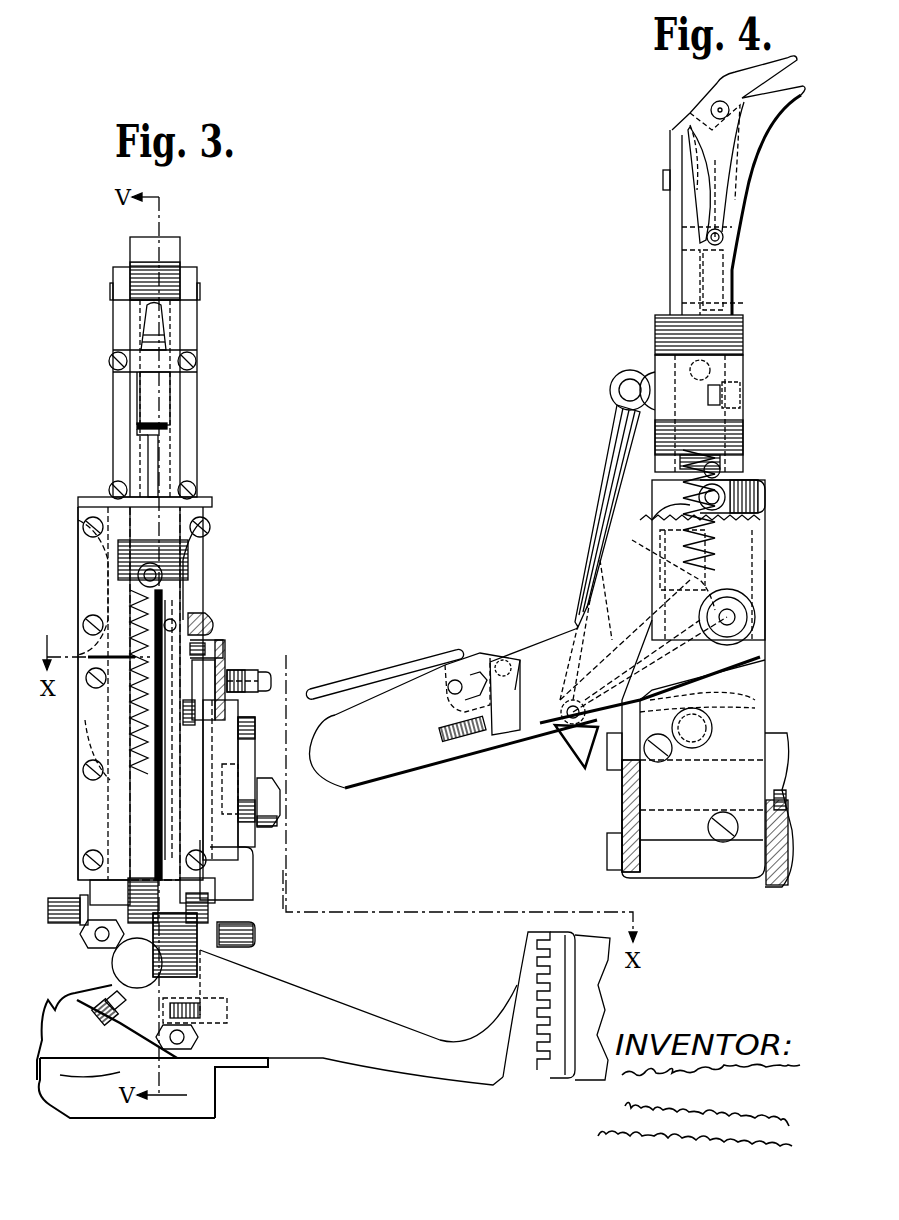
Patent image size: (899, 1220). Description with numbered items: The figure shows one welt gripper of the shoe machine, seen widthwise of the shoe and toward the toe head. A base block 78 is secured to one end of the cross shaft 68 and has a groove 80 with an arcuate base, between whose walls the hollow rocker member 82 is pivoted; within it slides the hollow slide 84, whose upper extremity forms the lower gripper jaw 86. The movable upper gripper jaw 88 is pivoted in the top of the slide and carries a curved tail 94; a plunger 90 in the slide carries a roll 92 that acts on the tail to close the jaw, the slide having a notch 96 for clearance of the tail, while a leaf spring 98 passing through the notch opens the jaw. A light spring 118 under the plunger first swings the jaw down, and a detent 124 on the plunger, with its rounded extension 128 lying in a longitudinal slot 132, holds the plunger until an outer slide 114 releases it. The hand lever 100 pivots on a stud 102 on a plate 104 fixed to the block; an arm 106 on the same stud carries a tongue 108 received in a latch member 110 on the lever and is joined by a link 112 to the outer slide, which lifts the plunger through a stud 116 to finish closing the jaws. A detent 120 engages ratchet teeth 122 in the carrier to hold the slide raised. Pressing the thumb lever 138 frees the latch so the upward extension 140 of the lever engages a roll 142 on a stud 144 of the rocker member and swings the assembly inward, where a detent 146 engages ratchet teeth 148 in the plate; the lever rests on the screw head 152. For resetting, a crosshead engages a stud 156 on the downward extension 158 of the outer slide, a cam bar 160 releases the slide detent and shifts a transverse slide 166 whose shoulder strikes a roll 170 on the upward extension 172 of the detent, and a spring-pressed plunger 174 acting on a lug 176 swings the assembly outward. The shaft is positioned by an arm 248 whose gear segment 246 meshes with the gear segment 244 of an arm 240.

In FIG. 3, the cross shaft 68 is at (95, 985).
In FIG. 4, the cross shaft 68 is at (782, 800).
In FIG. 3, the base member or block 78 is at (92, 887).
In FIG. 4, the base member or block 78 is at (745, 725).
In FIG. 3, the groove 80 is at (122, 980).
In FIG. 4, the groove 80 is at (777, 745).
In FIG. 3, the hollow rocker member or carrier 82 is at (92, 735).
In FIG. 4, the hollow rocker member or carrier 82 is at (765, 665).
In FIG. 3, the hollow slide 84 is at (197, 456).
In FIG. 4, the hollow slide 84 is at (735, 285).
In FIG. 4, the lower gripper jaw 86 is at (790, 102).
In FIG. 3, the upper gripper jaw 88 is at (180, 240).
In FIG. 4, the upper gripper jaw 88 is at (797, 58).
In FIG. 3, the plunger 90 is at (140, 433).
In FIG. 4, the plunger 90 is at (700, 275).
In FIG. 4, the roll 92 is at (724, 240).
In FIG. 3, the tail 94 is at (162, 400).
In FIG. 4, the tail 94 is at (720, 212).
In FIG. 3, the notch 96 is at (140, 400).
In FIG. 4, the notch 96 is at (680, 250).
In FIG. 3, the leaf spring 98 is at (160, 325).
In FIG. 4, the leaf spring 98 is at (672, 150).
In FIG. 3, the hand lever 100 is at (255, 870).
In FIG. 4, the hand lever 100 is at (453, 720).
In FIG. 3, the stud 102 is at (280, 806).
In FIG. 4, the stud 102 is at (755, 620).
In FIG. 3, the plate 104 is at (222, 741).
In FIG. 4, the plate 104 is at (765, 578).
In FIG. 3, the arm 106 is at (224, 770).
In FIG. 4, the arm 106 is at (580, 625).
In FIG. 4, the tongue 108 is at (570, 756).
In FIG. 4, the latch member 110 is at (533, 742).
In FIG. 3, the link 112 is at (145, 760).
In FIG. 4, the link 112 is at (617, 430).
In FIG. 3, the outer slide 114 is at (205, 568).
In FIG. 4, the outer slide 114 is at (745, 370).
In FIG. 4, the stud 116 is at (742, 398).
In FIG. 3, the spring 118 is at (132, 690).
In FIG. 4, the spring 118 is at (765, 552).
In FIG. 4, the detent 120 is at (643, 646).
In FIG. 4, the ratchet teeth 122 is at (650, 540).
In FIG. 4, the detent 124 is at (734, 305).
In FIG. 3, the rounded extension 128 is at (200, 503).
In FIG. 4, the rounded extension 128 is at (655, 337).
In FIG. 3, the longitudinal slot 132 is at (150, 447).
In FIG. 4, the thumb lever 138 is at (390, 668).
In FIG. 3, the upward extension 140 is at (255, 735).
In FIG. 4, the upward extension 140 is at (602, 575).
In FIG. 3, the roll 142 is at (271, 680).
In FIG. 4, the roll 142 is at (738, 512).
In FIG. 3, the stud 144 is at (271, 688).
In FIG. 3, the detent 146 is at (250, 681).
In FIG. 4, the detent 146 is at (700, 508).
In FIG. 4, the ratchet teeth 148 is at (650, 502).
In FIG. 3, the head 152 is at (255, 940).
In FIG. 3, the stud 156 is at (60, 922).
In FIG. 3, the downward extension 158 is at (76, 822).
In FIG. 3, the cam member or bar 160 is at (207, 624).
In FIG. 3, the transverse slide 166 is at (186, 720).
In FIG. 3, the roll 170 is at (212, 653).
In FIG. 4, the roll 170 is at (722, 470).
In FIG. 3, the upward extension 172 is at (210, 655).
In FIG. 4, the upward extension 172 is at (690, 462).
In FIG. 4, the spring-pressed plunger 174 is at (752, 708).
In FIG. 4, the lug 176 is at (752, 692).
In FIG. 3, the arm 240 is at (600, 990).
In FIG. 3, the gear segment 244 is at (562, 935).
In FIG. 3, the gear segment 246 is at (537, 942).
In FIG. 3, the arm 248 is at (358, 1017).
In FIG. 4, the arm 248 is at (622, 820).